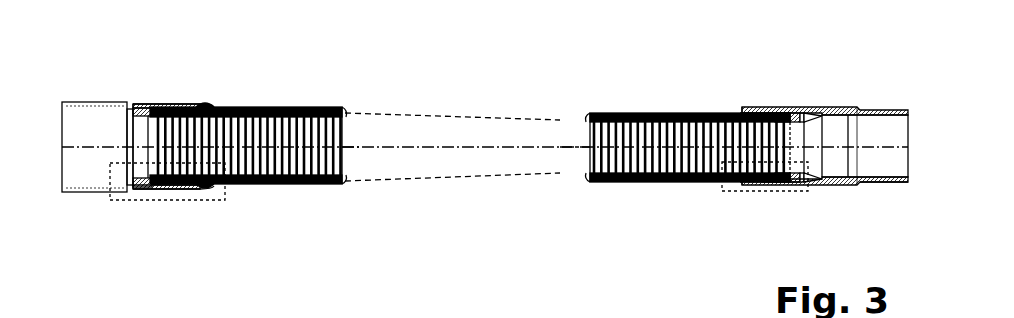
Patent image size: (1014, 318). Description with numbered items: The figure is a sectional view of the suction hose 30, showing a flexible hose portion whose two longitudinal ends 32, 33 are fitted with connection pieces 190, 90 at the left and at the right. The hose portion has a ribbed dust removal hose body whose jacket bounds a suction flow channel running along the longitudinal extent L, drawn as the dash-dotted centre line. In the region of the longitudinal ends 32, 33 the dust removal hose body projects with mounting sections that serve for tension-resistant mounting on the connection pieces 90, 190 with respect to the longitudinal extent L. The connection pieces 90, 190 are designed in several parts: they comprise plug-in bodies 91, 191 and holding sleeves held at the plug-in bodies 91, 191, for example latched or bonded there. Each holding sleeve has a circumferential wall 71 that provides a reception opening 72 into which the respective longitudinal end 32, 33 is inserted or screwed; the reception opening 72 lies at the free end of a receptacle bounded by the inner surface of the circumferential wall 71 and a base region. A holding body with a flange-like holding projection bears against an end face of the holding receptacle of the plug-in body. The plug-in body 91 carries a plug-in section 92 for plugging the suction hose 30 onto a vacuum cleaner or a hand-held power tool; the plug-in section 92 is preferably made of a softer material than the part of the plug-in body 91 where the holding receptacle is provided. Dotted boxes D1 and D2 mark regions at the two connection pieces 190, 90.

The suction hose 30 is at (802, 94).
The longitudinal end 32 is at (212, 104).
The longitudinal end 33 is at (722, 110).
The circumferential wall 71 is at (774, 111).
The reception opening 72 is at (782, 180).
The connection piece 90 is at (886, 96).
The plug-in body 91 is at (893, 111).
The plug-in section 92 is at (886, 186).
The connection piece 190 is at (100, 90).
The plug-in body 191 is at (75, 101).
The longitudinal extent L is at (417, 146).
The detail region D1 is at (108, 200).
The detail region D2 is at (722, 190).